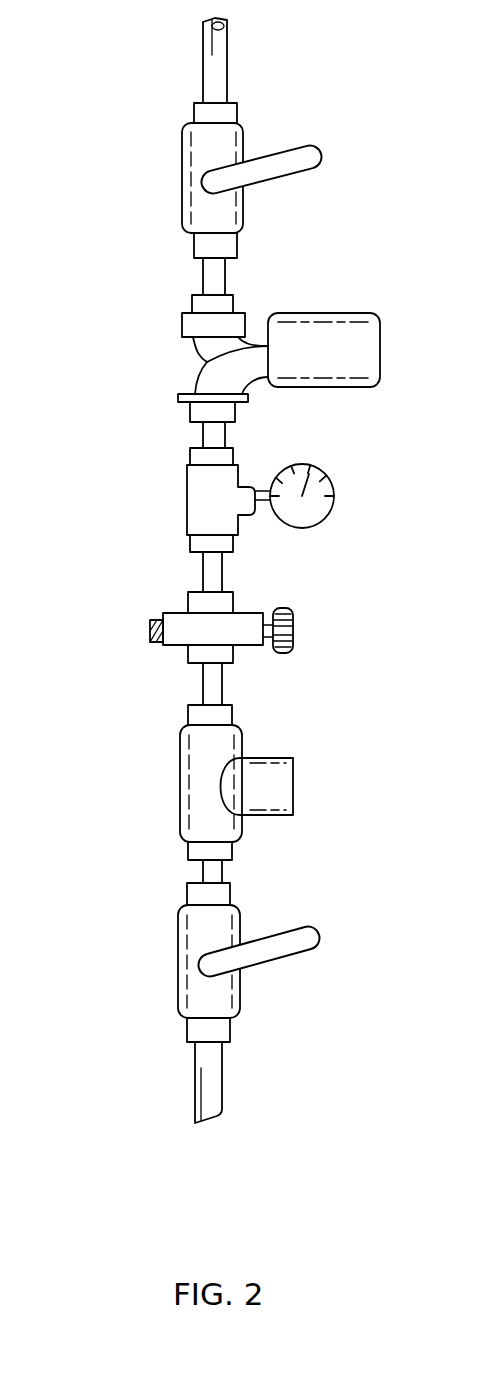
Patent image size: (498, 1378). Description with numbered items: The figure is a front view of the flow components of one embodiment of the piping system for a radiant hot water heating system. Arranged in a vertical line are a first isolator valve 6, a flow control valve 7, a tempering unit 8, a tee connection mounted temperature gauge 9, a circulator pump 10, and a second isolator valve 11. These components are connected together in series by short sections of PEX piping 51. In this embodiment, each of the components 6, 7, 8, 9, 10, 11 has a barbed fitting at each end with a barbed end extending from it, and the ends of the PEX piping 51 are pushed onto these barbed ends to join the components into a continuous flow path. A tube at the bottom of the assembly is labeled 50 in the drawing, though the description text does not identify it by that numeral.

The first isolator valve 6 is at (183, 965).
The flow control valve 7 is at (193, 793).
The tempering unit 8 is at (173, 648).
The tee connection mounted temperature gauge 9 is at (190, 510).
The circulator pump 10 is at (197, 383).
The second isolator valve 11 is at (192, 208).
The outlet tube 50 is at (207, 1122).
The PEX piping 51 is at (212, 686).